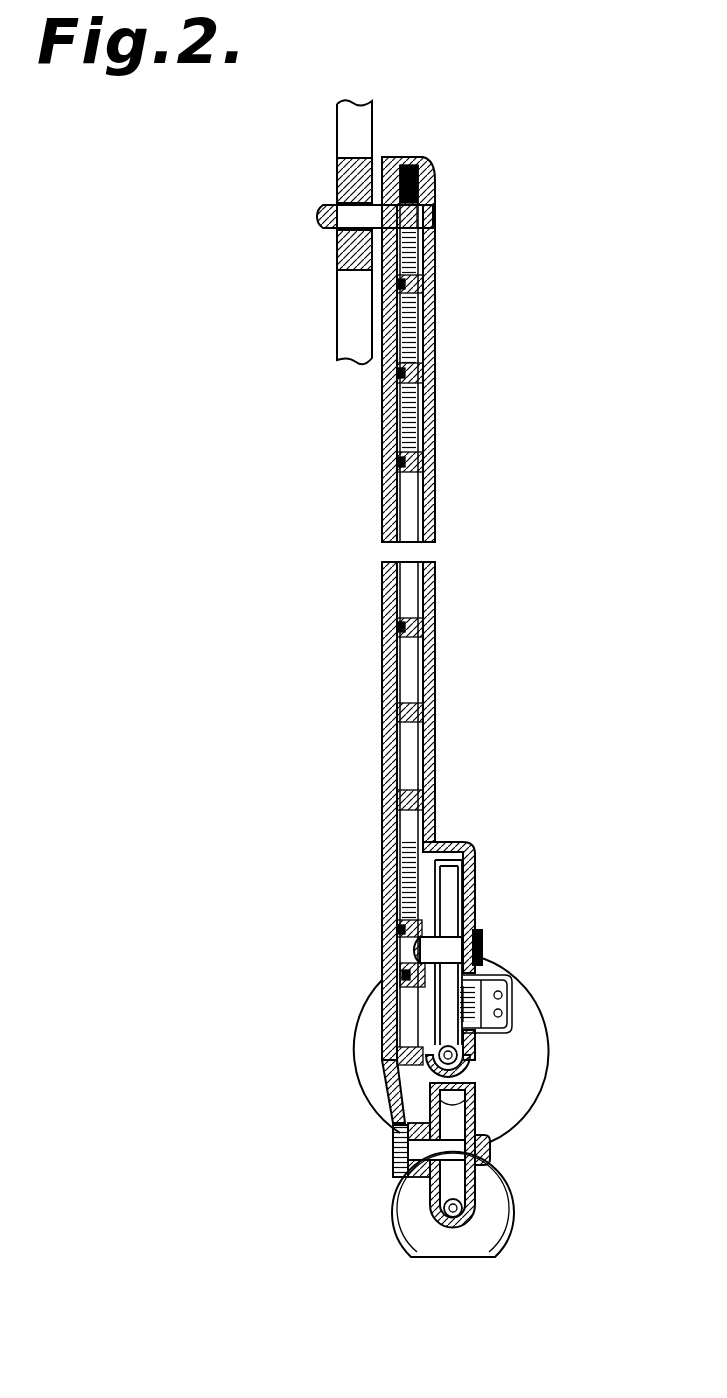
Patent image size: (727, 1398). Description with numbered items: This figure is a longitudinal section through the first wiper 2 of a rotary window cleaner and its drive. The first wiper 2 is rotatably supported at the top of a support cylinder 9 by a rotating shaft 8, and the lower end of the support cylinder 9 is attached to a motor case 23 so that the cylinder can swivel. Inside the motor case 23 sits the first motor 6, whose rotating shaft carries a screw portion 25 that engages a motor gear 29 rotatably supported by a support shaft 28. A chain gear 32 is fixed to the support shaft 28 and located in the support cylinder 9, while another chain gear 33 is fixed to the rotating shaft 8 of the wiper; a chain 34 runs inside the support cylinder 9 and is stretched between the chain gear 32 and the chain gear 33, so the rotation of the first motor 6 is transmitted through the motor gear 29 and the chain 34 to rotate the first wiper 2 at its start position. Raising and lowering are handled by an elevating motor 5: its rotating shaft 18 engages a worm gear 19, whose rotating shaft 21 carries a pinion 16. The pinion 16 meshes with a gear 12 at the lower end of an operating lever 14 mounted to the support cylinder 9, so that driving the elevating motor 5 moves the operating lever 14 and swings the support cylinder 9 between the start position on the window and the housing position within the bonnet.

The first wiper 2 is at (345, 303).
The elevating motor 5 is at (490, 1226).
The first motor 6 is at (522, 1080).
The rotating shaft 8 is at (430, 217).
The support cylinder 9 is at (383, 582).
The gear 12 is at (397, 1126).
The operating lever 14 is at (387, 1080).
The pinion 16 is at (390, 1163).
The rotating shaft 18 is at (457, 1230).
The worm gear 19 is at (455, 1125).
The rotating shaft 21 is at (487, 1150).
The motor case 23 is at (486, 860).
The screw portion 25 is at (470, 1058).
The support shaft 28 is at (463, 955).
The motor gear 29 is at (448, 912).
The chain gear 32 is at (398, 924).
The chain gear 33 is at (433, 182).
The chain 34 is at (410, 408).